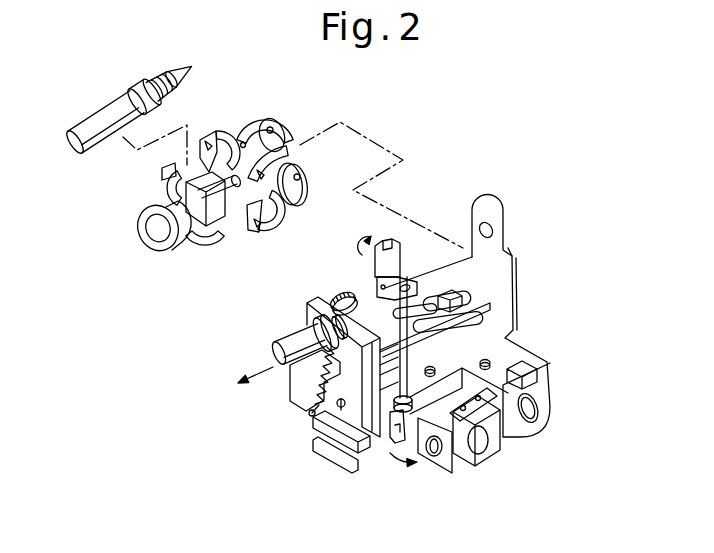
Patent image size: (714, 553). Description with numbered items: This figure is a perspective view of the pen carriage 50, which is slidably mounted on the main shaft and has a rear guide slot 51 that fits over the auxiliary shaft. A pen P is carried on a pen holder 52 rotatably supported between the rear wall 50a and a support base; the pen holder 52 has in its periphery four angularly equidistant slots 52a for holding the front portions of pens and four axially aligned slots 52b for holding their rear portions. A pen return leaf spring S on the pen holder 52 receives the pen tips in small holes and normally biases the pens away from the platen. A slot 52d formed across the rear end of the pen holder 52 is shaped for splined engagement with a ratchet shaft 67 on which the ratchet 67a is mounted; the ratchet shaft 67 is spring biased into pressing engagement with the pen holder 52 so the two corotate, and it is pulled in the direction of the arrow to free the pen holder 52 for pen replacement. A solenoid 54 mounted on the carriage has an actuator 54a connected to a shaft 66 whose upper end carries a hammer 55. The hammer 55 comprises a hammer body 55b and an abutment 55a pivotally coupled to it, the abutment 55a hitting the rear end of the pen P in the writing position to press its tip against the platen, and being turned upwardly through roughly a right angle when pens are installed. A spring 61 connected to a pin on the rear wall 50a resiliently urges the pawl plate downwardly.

The pen P is at (98, 112).
The return leaf spring S is at (246, 127).
The pen carriage 50 is at (537, 430).
The rear wall 50a is at (312, 302).
The rear guide slot 51 is at (330, 439).
The pen holder 52 is at (176, 262).
The slots for front portions of pens 52a is at (268, 217).
The slots for rear portions of pens 52b is at (158, 184).
The slot 52d is at (150, 255).
The solenoid 54 is at (471, 452).
The actuator 54a is at (448, 461).
The hammer 55 is at (364, 266).
The abutment 55a is at (393, 238).
The hammer body 55b is at (397, 281).
The spring 61 is at (298, 383).
The shaft 66 is at (380, 407).
The ratchet shaft 67 is at (285, 348).
The ratchet 67a is at (340, 300).